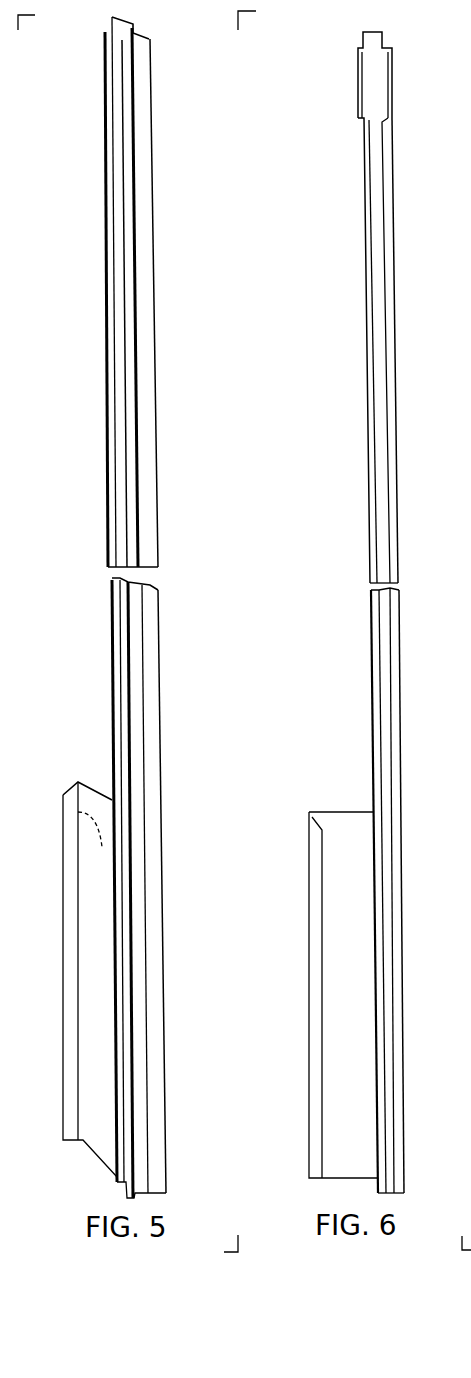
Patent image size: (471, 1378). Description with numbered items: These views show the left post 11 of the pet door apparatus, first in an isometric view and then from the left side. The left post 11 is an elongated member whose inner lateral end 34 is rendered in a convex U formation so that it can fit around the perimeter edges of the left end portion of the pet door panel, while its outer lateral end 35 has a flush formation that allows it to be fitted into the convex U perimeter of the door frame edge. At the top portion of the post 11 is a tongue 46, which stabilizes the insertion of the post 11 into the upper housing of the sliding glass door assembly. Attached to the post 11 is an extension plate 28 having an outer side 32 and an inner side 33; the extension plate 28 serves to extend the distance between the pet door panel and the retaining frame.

In FIG. 5, the left post 11 is at (128, 607).
In FIG. 6, the left post 11 is at (376, 612).
In FIG. 5, the extension plate 28 is at (109, 797).
In FIG. 6, the extension plate 28 is at (345, 810).
In FIG. 5, the outer side 32 is at (78, 812).
In FIG. 6, the outer side 32 is at (335, 845).
In FIG. 5, the inner side 33 is at (74, 956).
In FIG. 6, the inner side 33 is at (320, 968).
In FIG. 5, the inner lateral end 34 is at (113, 158).
In FIG. 6, the inner lateral end 34 is at (377, 143).
In FIG. 5, the outer lateral end 35 is at (139, 193).
In FIG. 5, the tongue 46 is at (106, 32).
In FIG. 6, the tongue 46 is at (368, 38).